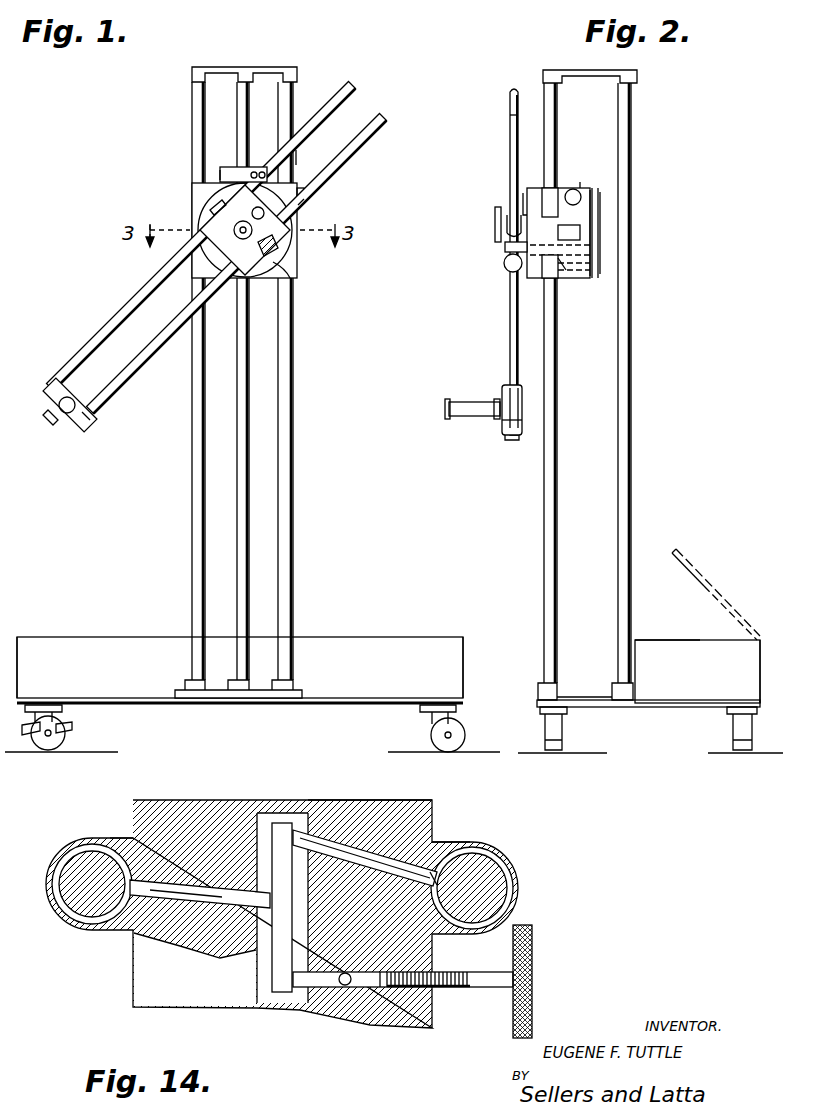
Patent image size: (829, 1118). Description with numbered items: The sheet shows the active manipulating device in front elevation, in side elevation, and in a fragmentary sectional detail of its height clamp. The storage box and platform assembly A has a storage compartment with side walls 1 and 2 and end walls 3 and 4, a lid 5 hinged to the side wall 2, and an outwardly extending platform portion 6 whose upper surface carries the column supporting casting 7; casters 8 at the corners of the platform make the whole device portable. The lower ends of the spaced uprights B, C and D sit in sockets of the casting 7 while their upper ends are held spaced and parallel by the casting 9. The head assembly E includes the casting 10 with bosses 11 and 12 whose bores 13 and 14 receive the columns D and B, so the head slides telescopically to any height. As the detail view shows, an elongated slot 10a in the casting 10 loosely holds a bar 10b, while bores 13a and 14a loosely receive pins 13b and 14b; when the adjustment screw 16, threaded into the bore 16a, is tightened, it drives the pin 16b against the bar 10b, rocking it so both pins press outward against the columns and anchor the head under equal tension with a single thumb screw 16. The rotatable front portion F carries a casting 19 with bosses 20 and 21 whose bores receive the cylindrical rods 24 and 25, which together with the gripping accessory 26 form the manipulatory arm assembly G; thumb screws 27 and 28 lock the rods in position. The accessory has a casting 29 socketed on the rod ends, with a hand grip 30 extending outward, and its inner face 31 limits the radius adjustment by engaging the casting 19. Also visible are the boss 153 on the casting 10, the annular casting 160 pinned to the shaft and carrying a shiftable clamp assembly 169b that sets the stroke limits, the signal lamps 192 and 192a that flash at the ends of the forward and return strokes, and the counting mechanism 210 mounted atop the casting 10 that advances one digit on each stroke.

In FIG. 1, the side wall 1 is at (345, 653).
In FIG. 2, the side wall 1 is at (635, 656).
In FIG. 2, the side wall 2 is at (764, 668).
In FIG. 1, the end wall 3 is at (14, 650).
In FIG. 1, the end wall 4 is at (464, 672).
In FIG. 2, the end wall 4 is at (663, 647).
In FIG. 2, the lid 5 is at (702, 602).
In FIG. 2, the platform portion 6 is at (599, 709).
In FIG. 2, the column supporting casting 7 is at (540, 114).
In FIG. 1, the casters 8 is at (252, 745).
In FIG. 2, the casters 8 is at (650, 742).
In FIG. 14, the casters 8 is at (379, 784).
In FIG. 1, the casting 9 is at (246, 74).
In FIG. 2, the casting 10 is at (556, 276).
In FIG. 14, the elongated slot 10a is at (278, 808).
In FIG. 14, the bar 10b is at (292, 830).
In FIG. 1, the boss 11 is at (289, 190).
In FIG. 2, the boss 11 is at (566, 280).
In FIG. 14, the boss 11 is at (499, 870).
In FIG. 1, the boss 12 is at (196, 196).
In FIG. 14, the boss 12 is at (95, 838).
In FIG. 14, the bore 13 is at (470, 848).
In FIG. 14, the bore 13a is at (395, 860).
In FIG. 14, the pin 13b is at (422, 853).
In FIG. 14, the bore 14 is at (82, 860).
In FIG. 14, the bore 14a is at (160, 898).
In FIG. 14, the pin 14b is at (222, 905).
In FIG. 1, the adjustment screw 16 is at (306, 210).
In FIG. 2, the adjustment screw 16 is at (580, 192).
In FIG. 14, the adjustment screw 16 is at (513, 1005).
In FIG. 14, the bore 16a is at (345, 986).
In FIG. 14, the pin 16b is at (382, 988).
In FIG. 1, the casting 19 is at (212, 237).
In FIG. 2, the casting 19 is at (523, 206).
In FIG. 1, the boss 20 is at (296, 237).
In FIG. 1, the boss 21 is at (226, 233).
In FIG. 1, the cylindrical rod 24 is at (387, 128).
In FIG. 1, the cylindrical rod 25 is at (358, 100).
In FIG. 1, the gripping accessory 26 is at (68, 428).
In FIG. 2, the gripping accessory 26 is at (498, 426).
In FIG. 1, the thumb screw 27 is at (280, 281).
In FIG. 2, the thumb screw 27 is at (507, 271).
In FIG. 1, the thumb screw 28 is at (214, 206).
In FIG. 1, the casting 29 is at (86, 428).
In FIG. 2, the casting 29 is at (510, 438).
In FIG. 2, the hand grip 30 is at (462, 418).
In FIG. 1, the inner face 31 is at (98, 413).
In FIG. 2, the boss 153 is at (583, 230).
In FIG. 2, the annular casting 160 is at (568, 258).
In FIG. 2, the clamp assembly 169b is at (602, 232).
In FIG. 1, the incandescent lamp 192 is at (256, 168).
In FIG. 1, the incandescent lamp 192a is at (297, 150).
In FIG. 1, the counting mechanism 210 is at (218, 170).
In FIG. 1, the storage box and platform assembly A is at (380, 660).
In FIG. 1, the upright B is at (191, 505).
In FIG. 14, the upright B is at (84, 880).
In FIG. 1, the upright C is at (239, 503).
In FIG. 2, the upright C is at (626, 412).
In FIG. 1, the upright D is at (286, 500).
In FIG. 2, the upright D is at (555, 420).
In FIG. 14, the upright D is at (488, 886).
In FIG. 1, the head assembly E is at (302, 214).
In FIG. 2, the head assembly E is at (581, 176).
In FIG. 2, the front portion of the head assembly F is at (500, 252).
In FIG. 1, the manipulatory arm assembly G is at (62, 372).
In FIG. 2, the manipulatory arm assembly G is at (502, 358).